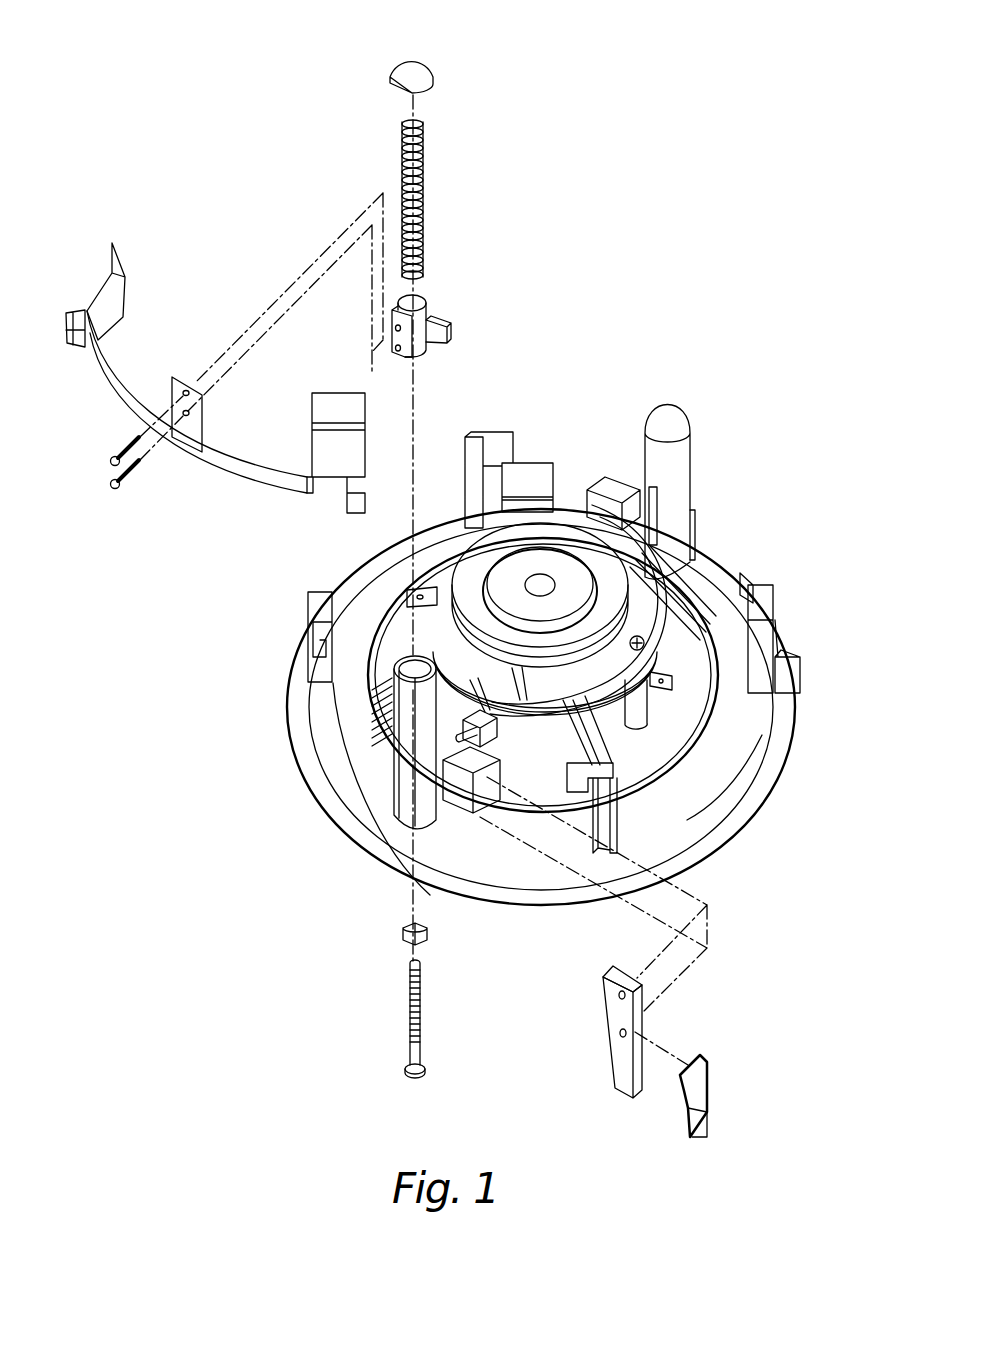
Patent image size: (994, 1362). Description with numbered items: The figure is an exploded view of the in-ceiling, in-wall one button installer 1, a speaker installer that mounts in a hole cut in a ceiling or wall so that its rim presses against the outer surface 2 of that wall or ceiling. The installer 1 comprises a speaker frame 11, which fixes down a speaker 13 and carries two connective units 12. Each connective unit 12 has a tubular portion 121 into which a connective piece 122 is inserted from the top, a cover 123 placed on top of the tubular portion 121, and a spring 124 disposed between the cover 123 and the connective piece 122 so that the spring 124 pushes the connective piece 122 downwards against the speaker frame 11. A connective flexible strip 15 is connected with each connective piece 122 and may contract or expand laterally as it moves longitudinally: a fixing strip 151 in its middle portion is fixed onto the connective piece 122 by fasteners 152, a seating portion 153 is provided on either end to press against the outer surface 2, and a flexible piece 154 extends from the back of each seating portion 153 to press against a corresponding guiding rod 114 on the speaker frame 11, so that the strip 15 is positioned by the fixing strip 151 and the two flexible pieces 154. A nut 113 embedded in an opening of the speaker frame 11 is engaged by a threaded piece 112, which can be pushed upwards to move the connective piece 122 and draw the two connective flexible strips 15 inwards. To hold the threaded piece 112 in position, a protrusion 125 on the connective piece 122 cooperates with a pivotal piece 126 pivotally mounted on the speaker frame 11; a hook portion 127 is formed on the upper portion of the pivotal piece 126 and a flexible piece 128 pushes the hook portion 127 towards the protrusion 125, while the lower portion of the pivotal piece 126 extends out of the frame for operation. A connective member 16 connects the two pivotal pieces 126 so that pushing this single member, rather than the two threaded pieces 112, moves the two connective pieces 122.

The in-ceiling, in-wall one button installer 1 is at (507, 627).
The outer surface 2 is at (703, 842).
The speaker frame 11 is at (389, 568).
The connective unit 12 is at (683, 397).
The speaker 13 is at (558, 535).
The connective flexible strip 15 is at (227, 463).
The connective member 16 is at (623, 515).
The threaded piece 112 is at (407, 1005).
The nut 113 is at (407, 930).
The guiding rod 114 is at (328, 645).
The tubular portion 121 is at (387, 773).
The connective piece 122 is at (400, 362).
The cover 123 is at (410, 57).
The spring 124 is at (425, 178).
The protrusion 125 is at (443, 321).
The pivotal piece 126 is at (623, 1065).
The hook portion 127 is at (612, 968).
The flexible piece 128 is at (697, 1077).
The fixing strip 151 is at (187, 443).
The fasteners 152 is at (113, 483).
The seating portion 153 is at (67, 340).
The flexible piece 154 is at (103, 302).